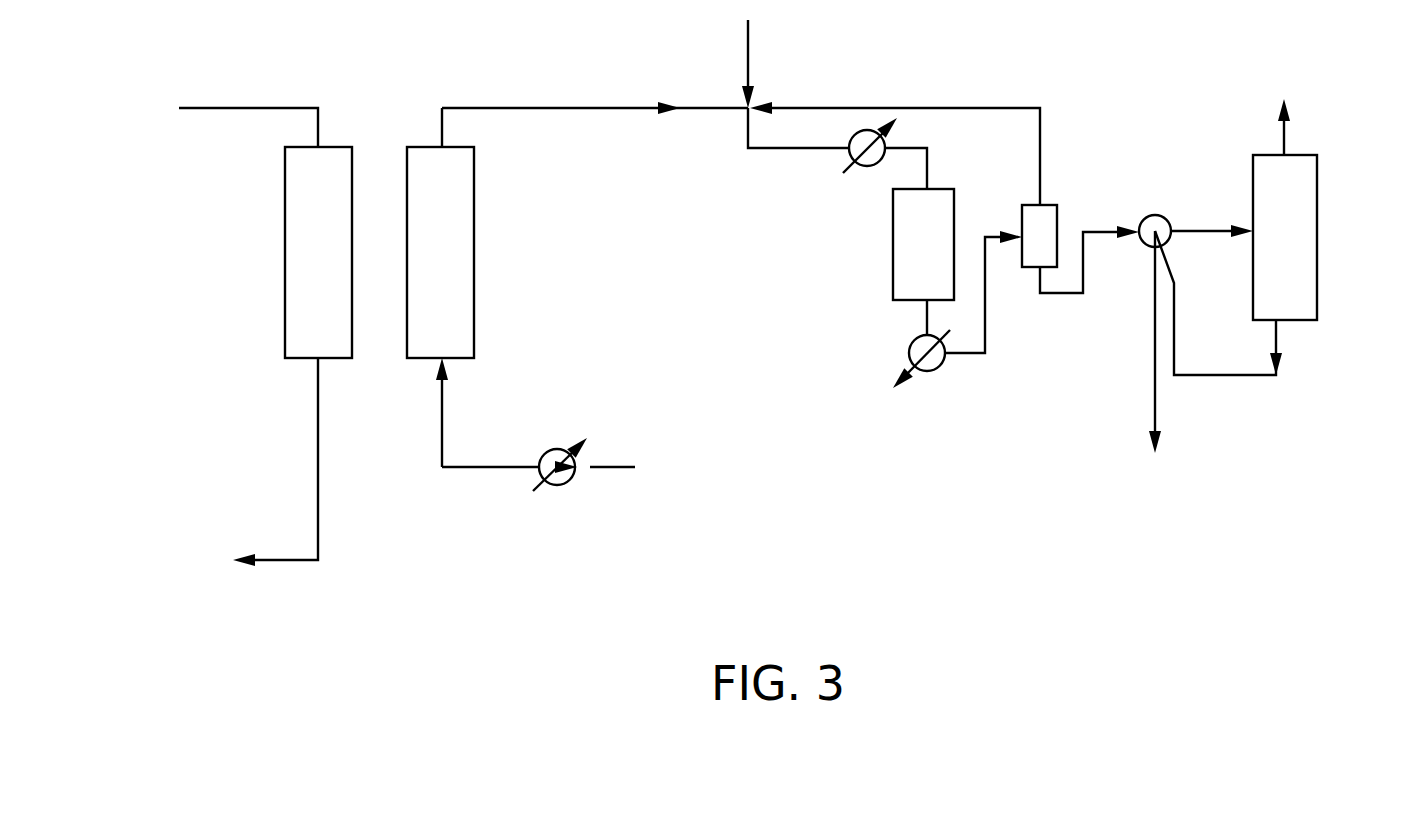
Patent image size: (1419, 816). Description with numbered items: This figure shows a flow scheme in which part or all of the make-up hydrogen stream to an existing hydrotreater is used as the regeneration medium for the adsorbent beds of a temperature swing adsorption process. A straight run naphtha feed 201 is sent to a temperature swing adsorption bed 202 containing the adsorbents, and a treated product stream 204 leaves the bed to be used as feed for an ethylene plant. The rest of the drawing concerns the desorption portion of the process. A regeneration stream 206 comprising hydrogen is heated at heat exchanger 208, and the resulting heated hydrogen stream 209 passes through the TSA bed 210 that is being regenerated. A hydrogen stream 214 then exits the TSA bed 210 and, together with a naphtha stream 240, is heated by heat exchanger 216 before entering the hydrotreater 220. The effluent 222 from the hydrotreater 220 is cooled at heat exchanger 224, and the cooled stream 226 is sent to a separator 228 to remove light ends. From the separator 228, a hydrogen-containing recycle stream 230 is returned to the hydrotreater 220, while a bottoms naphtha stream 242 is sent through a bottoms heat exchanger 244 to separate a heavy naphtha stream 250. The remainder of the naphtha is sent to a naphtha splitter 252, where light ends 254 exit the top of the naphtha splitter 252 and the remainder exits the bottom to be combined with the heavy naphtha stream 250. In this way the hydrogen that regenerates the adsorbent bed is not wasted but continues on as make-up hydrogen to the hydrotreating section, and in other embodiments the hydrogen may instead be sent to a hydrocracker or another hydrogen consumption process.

The straight run naphtha feed 201 is at (250, 107).
The temperature swing adsorption bed 202 is at (318, 252).
The treated product stream 204 is at (289, 562).
The regeneration stream 206 is at (623, 467).
The heat exchanger 208 is at (556, 440).
The heated hydrogen stream 209 is at (442, 404).
The TSA bed 210 is at (440, 233).
The hydrogen stream 214 is at (530, 107).
The heat exchanger 216 is at (869, 167).
The hydrotreater 220 is at (923, 244).
The effluent 222 is at (927, 318).
The heat exchanger 224 is at (935, 372).
The cooled stream 226 is at (982, 355).
The separator 228 is at (1033, 205).
The recycle stream 230 is at (865, 106).
The naphtha stream 240 is at (748, 62).
The bottoms naphtha stream 242 is at (1055, 296).
The bottoms heat exchanger 244 is at (1157, 215).
The heavy naphtha stream 250 is at (1155, 410).
The naphtha splitter 252 is at (1285, 237).
The light ends 254 is at (1284, 130).